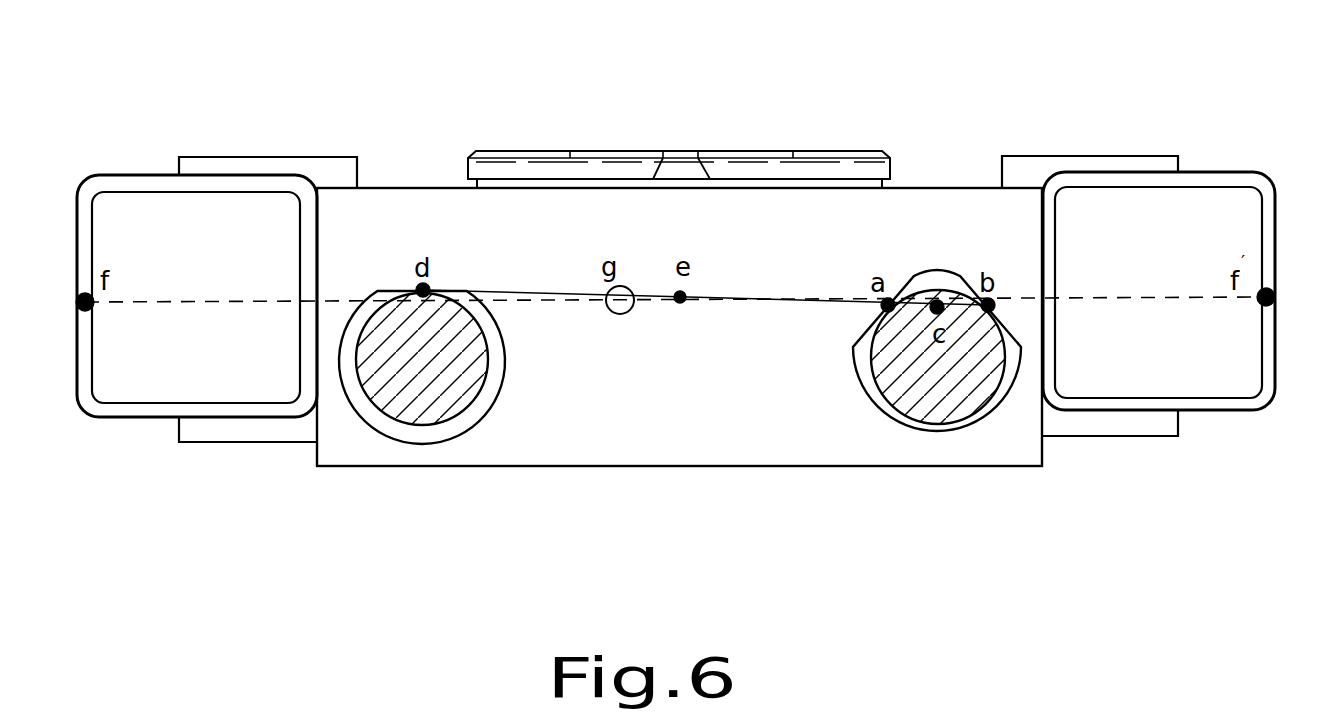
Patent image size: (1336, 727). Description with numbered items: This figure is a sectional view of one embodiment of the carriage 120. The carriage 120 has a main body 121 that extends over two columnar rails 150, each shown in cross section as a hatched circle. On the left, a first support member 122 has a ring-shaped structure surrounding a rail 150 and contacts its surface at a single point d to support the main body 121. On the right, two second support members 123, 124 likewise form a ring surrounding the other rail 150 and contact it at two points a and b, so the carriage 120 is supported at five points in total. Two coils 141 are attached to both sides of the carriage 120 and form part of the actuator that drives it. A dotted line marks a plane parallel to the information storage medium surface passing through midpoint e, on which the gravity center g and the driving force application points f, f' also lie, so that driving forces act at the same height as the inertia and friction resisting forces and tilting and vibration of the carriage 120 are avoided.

The carriage 120 is at (842, 120).
The main body 121 is at (783, 443).
The first support member 122 is at (366, 419).
The second support member 123 is at (1019, 430).
The second support member 124 is at (990, 418).
The coil 141 is at (132, 413).
The columnar rail 150 is at (437, 422).